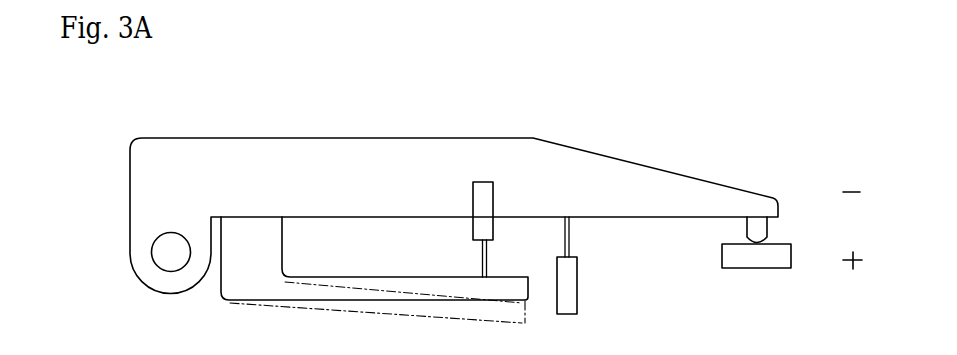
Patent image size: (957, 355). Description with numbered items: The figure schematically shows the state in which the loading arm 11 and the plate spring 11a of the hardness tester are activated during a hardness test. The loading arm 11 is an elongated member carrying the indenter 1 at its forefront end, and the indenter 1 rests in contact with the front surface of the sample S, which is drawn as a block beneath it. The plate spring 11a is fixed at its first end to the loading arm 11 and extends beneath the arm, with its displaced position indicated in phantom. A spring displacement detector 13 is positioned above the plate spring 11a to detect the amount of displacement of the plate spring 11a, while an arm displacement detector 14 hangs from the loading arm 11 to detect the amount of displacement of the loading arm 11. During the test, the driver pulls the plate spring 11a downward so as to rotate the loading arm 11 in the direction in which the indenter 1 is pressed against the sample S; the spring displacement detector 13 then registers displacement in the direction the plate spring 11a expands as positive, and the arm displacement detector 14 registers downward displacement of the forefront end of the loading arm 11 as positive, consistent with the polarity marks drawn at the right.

The loading arm 11 is at (637, 175).
The plate spring 11a is at (447, 288).
The spring displacement detector 13 is at (485, 192).
The arm displacement detector 14 is at (573, 293).
The indenter 1 is at (767, 237).
The sample S is at (740, 258).